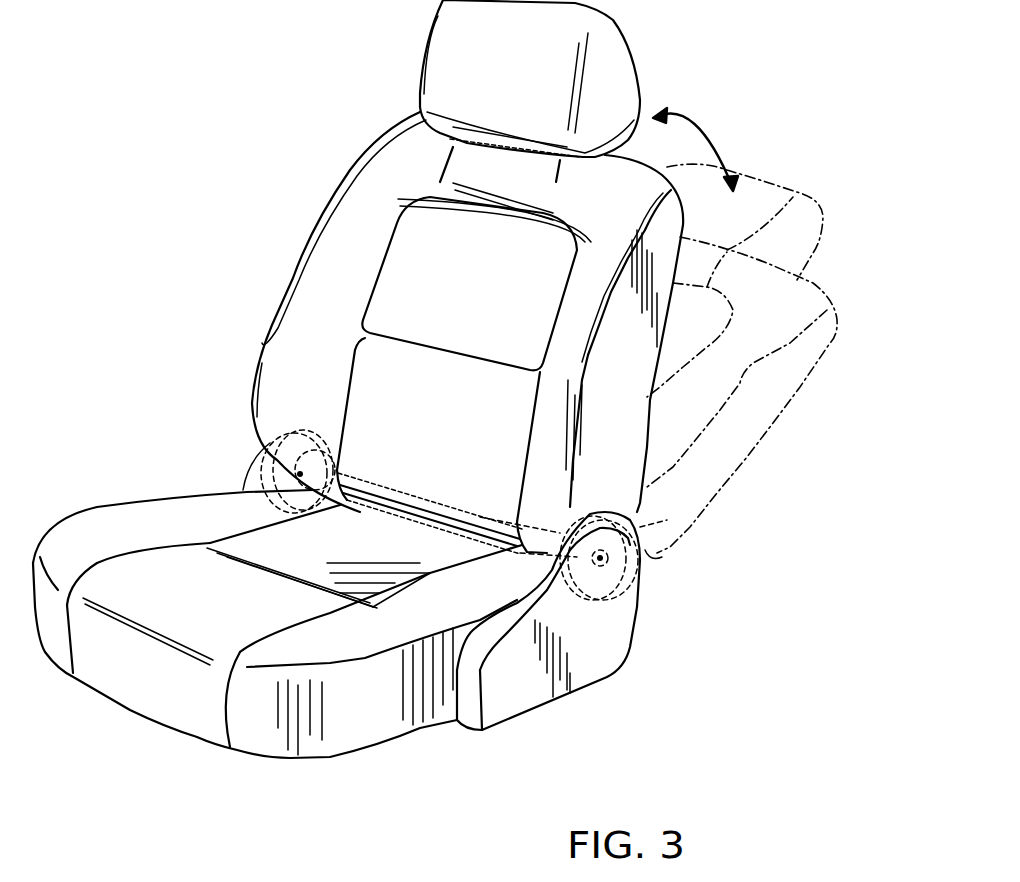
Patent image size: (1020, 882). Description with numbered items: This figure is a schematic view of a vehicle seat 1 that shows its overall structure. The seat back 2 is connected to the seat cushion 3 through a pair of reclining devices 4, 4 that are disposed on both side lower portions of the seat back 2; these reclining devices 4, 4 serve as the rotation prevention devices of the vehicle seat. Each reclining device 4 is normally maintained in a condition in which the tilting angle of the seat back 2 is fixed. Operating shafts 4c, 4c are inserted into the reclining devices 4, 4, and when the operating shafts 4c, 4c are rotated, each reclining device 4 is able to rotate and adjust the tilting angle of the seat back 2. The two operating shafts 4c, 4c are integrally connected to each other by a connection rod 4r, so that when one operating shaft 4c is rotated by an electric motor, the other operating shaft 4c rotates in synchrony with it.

The vehicle seat 1 is at (296, 148).
The seat back 2 is at (343, 258).
The seat cushion 3 is at (120, 527).
The reclining device 4 is at (301, 450).
The operating shaft 4c is at (302, 474).
The connection rod 4r is at (420, 507).